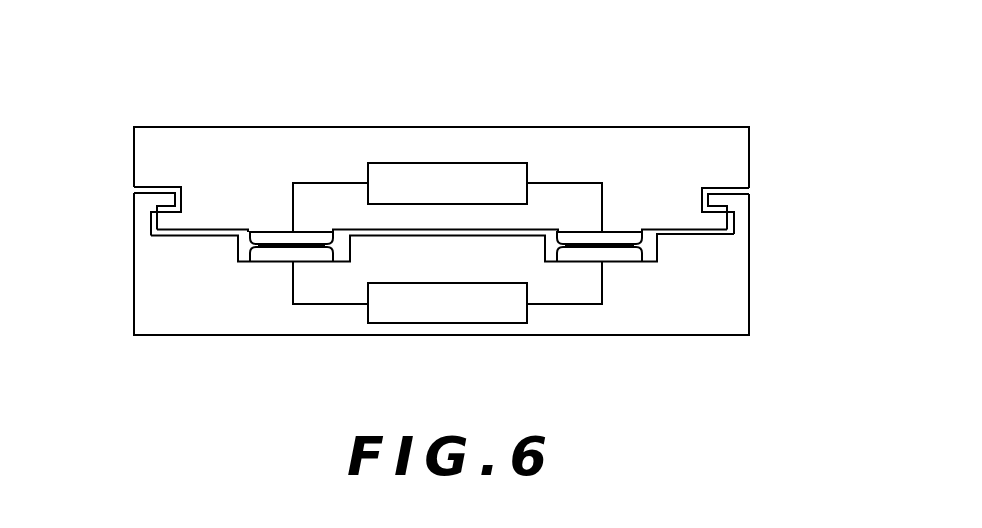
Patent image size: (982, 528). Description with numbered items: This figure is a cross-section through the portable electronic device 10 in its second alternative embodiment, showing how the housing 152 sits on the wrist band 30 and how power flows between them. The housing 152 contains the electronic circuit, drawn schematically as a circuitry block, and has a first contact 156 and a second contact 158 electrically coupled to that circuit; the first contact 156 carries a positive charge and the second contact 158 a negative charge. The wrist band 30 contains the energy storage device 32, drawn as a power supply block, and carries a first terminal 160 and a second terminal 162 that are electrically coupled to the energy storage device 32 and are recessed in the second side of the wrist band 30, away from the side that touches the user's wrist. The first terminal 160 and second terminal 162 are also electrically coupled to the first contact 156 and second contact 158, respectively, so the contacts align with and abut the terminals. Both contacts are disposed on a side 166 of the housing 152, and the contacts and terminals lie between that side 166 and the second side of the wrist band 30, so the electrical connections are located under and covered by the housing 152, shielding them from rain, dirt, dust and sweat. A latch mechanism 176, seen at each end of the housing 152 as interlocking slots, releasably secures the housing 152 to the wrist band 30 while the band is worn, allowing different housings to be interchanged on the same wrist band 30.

The portable electronic device 10 is at (872, 439).
The wrist band 30 is at (745, 335).
The energy storage device 32 is at (521, 320).
The housing 152 is at (178, 138).
The first contact 156 is at (280, 236).
The second contact 158 is at (610, 240).
The first terminal 160 is at (272, 255).
The second terminal 162 is at (615, 253).
The side of the housing 166 is at (202, 231).
The latch mechanism 176 is at (140, 230).